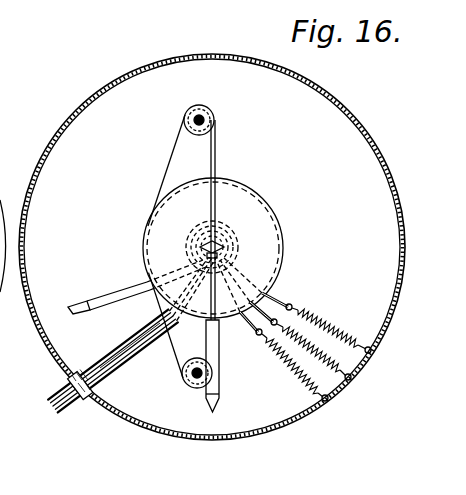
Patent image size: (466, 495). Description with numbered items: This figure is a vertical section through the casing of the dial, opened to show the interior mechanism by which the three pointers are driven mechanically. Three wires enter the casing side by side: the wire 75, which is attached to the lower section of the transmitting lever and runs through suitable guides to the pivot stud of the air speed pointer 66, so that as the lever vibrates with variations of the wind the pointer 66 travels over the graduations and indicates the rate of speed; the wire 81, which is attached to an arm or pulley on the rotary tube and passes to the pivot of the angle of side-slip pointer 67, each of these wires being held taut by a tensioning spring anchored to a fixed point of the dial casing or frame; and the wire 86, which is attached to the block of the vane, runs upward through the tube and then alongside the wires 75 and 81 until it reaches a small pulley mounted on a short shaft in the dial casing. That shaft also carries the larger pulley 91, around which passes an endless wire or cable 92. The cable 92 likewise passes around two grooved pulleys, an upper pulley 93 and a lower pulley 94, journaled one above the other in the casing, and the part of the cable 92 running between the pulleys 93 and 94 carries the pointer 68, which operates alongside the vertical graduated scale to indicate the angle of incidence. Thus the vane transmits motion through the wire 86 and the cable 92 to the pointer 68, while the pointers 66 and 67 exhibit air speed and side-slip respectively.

The air speed pointer 66 is at (104, 291).
The angle of side-slip pointer 67 is at (228, 390).
The angle of incidence pointer 68 is at (225, 247).
The wire 75 is at (117, 347).
The wire 81 is at (111, 372).
The wire 86 is at (135, 348).
The larger pulley 91 is at (255, 208).
The wire or cable 92 is at (216, 160).
The upper grooved pulley 93 is at (214, 118).
The lower grooved pulley 94 is at (186, 382).